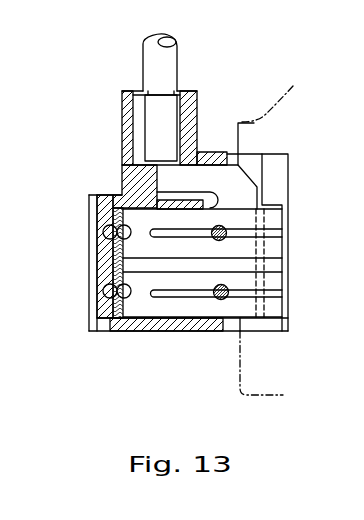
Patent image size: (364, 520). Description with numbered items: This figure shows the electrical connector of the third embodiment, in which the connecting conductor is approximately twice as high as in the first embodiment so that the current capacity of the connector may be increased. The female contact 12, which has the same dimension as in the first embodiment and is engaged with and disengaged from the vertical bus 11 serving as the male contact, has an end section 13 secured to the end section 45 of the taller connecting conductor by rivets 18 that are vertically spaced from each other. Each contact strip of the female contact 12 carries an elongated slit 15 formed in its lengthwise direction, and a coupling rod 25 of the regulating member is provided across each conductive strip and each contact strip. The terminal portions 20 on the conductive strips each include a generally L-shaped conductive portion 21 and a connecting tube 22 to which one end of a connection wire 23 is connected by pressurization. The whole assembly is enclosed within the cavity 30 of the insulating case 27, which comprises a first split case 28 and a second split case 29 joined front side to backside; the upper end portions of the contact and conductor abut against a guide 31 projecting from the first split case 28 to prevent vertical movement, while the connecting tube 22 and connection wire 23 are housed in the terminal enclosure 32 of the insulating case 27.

The vertical bus 11 is at (277, 93).
The female contact 12 is at (290, 225).
The end section 13 is at (128, 197).
The elongated slit 15 is at (176, 233).
The rivet 18 is at (108, 229).
The terminal portion 20 is at (141, 152).
The conductive portion 21 is at (212, 175).
The connecting tube 22 is at (157, 118).
The connection wire 23 is at (151, 56).
The coupling rod 25 is at (225, 227).
The insulating case 27 is at (120, 197).
The first split case 28 is at (107, 327).
The second split case 29 is at (190, 332).
The cavity 30 is at (89, 263).
The guide 31 is at (219, 198).
The terminal enclosure 32 is at (180, 80).
The end section 45 is at (110, 311).